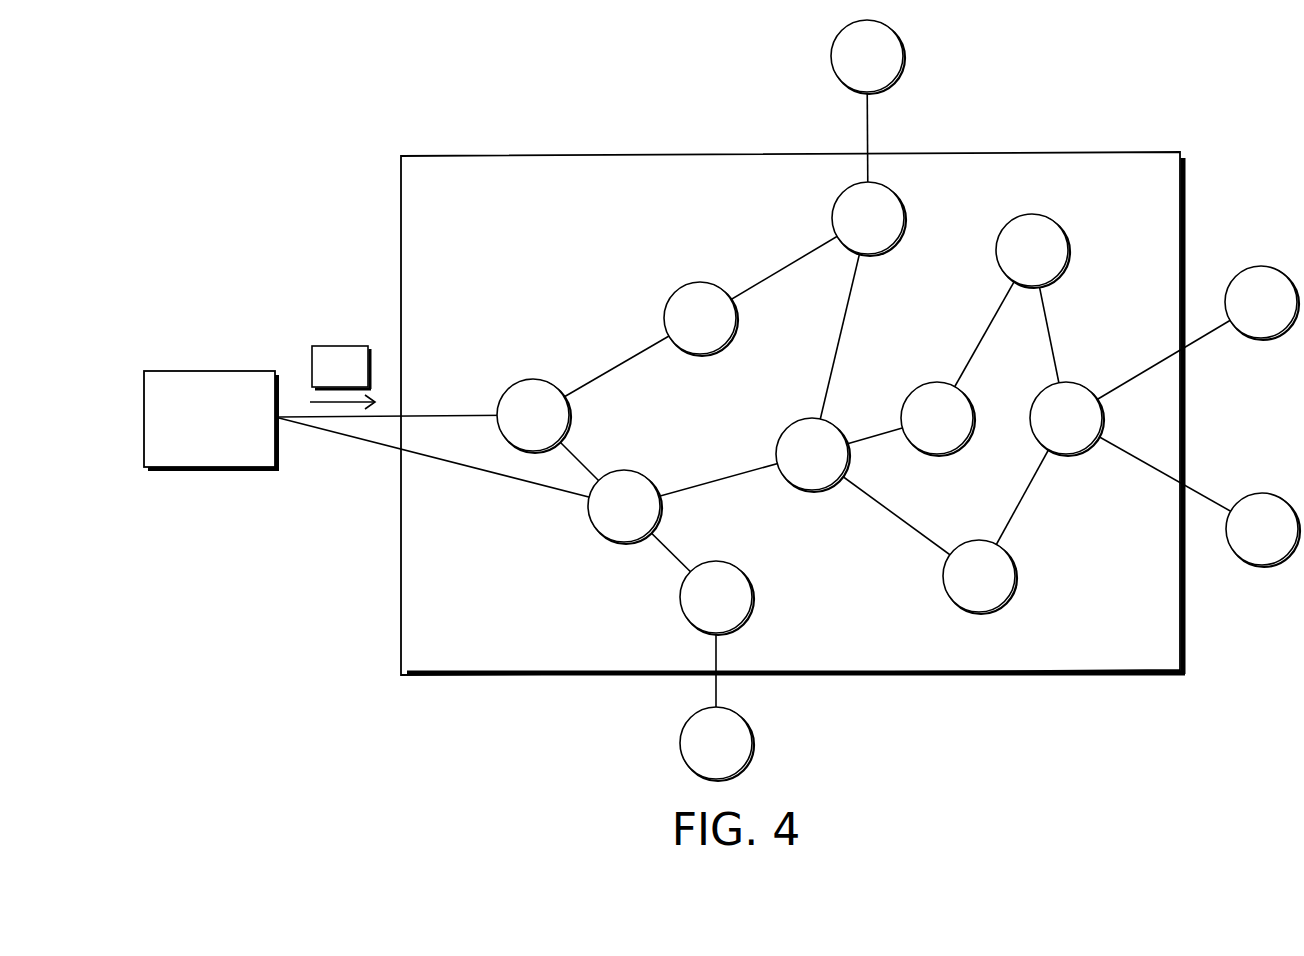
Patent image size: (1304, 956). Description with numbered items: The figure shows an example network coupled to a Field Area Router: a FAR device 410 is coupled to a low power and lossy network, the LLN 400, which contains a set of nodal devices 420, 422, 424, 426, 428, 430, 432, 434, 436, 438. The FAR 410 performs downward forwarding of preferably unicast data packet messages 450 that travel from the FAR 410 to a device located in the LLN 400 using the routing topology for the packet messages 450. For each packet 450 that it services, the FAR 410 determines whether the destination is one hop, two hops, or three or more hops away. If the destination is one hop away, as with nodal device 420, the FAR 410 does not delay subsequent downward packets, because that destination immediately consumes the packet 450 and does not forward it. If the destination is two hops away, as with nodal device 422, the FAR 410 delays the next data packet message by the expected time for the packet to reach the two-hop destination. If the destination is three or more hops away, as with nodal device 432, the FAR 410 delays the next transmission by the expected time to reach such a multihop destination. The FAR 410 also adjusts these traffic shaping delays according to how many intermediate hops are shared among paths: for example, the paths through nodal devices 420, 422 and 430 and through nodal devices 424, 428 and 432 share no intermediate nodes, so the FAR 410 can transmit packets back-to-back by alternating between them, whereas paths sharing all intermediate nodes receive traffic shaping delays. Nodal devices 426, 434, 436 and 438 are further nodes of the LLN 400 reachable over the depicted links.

The LLN 400 is at (1047, 146).
The FAR device 410 is at (190, 443).
The nodal device 420 is at (515, 428).
The nodal device 422 is at (682, 331).
The nodal device 424 is at (606, 519).
The nodal device 426 is at (698, 610).
The nodal device 428 is at (794, 467).
The nodal device 430 is at (850, 231).
The nodal device 432 is at (919, 431).
The nodal device 434 is at (961, 589).
The nodal device 436 is at (1048, 431).
The nodal device 438 is at (1014, 263).
The data packet message 450 is at (322, 378).